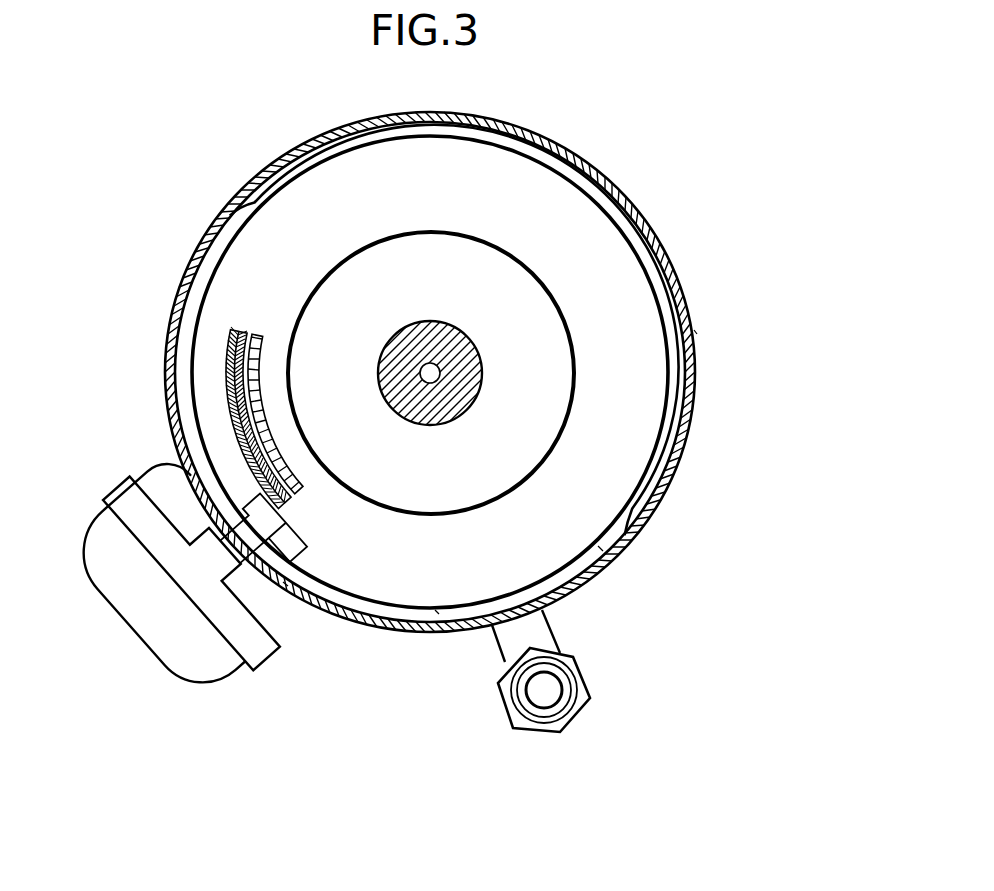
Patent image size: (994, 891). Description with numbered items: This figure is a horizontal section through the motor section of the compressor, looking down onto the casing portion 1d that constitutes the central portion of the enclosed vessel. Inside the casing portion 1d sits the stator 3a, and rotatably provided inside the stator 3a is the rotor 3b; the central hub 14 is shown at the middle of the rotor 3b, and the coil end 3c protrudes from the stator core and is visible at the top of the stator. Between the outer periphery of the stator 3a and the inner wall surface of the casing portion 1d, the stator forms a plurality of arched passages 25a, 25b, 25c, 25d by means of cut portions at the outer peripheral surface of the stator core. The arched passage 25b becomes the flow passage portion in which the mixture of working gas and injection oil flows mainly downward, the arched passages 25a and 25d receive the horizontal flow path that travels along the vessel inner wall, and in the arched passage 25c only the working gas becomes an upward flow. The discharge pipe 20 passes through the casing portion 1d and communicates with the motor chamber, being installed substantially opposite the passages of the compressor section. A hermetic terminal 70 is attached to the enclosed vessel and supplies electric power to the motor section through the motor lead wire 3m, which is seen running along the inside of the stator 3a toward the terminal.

The casing portion 1d is at (696, 331).
The stator 3a is at (437, 612).
The rotor 3b is at (508, 413).
The coil end 3c is at (517, 188).
The motor lead wire 3m is at (230, 378).
The shaft hub 14 is at (471, 342).
The discharge pipe 20 is at (583, 693).
The arched passage 25a is at (641, 205).
The arched passage 25b is at (261, 197).
The arched passage 25c is at (600, 548).
The arched passage 25d is at (285, 583).
The hermetic terminal 70 is at (205, 660).